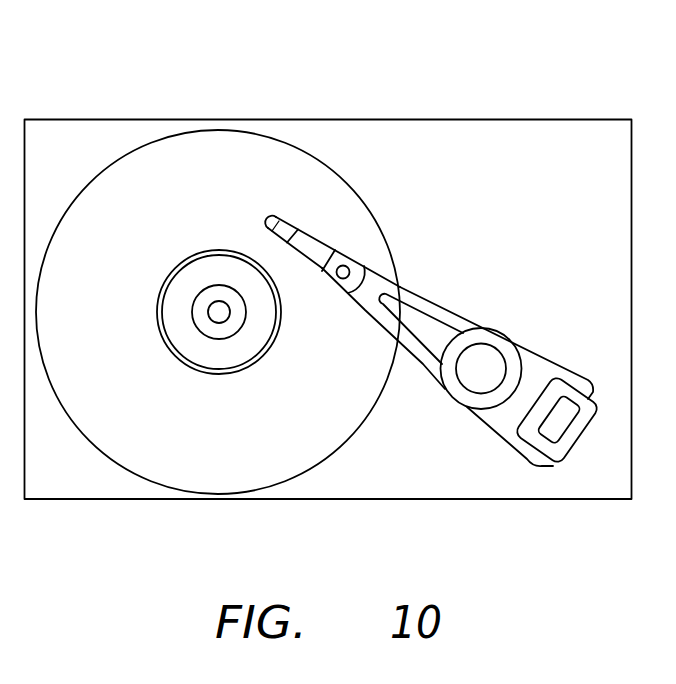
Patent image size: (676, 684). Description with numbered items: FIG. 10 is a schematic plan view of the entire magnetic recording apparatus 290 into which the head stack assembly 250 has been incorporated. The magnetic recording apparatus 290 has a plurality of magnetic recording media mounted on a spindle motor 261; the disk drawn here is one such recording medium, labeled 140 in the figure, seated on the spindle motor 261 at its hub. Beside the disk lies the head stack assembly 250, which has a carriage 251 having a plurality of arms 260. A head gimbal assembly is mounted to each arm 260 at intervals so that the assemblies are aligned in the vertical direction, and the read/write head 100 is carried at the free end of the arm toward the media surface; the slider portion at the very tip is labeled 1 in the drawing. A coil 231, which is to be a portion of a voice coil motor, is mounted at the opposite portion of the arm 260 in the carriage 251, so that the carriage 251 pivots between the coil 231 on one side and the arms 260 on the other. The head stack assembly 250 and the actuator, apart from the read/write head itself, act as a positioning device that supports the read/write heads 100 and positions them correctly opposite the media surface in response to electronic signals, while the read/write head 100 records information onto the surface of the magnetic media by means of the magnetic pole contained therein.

The magnetic recording apparatus 290 is at (362, 108).
The magnetic disk 140 is at (152, 483).
The spindle motor 261 is at (219, 317).
The magnetic head slider 1 is at (281, 214).
The read/write head 100 is at (322, 269).
The carriage 251 is at (495, 330).
The arm 260 is at (431, 361).
The head stack assembly 250 is at (491, 432).
The coil 231 is at (585, 438).